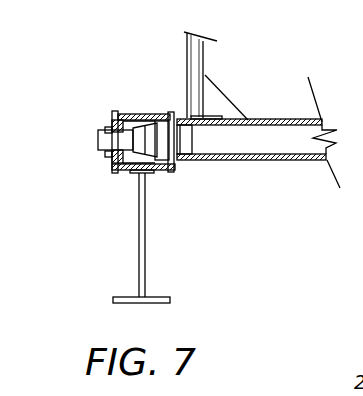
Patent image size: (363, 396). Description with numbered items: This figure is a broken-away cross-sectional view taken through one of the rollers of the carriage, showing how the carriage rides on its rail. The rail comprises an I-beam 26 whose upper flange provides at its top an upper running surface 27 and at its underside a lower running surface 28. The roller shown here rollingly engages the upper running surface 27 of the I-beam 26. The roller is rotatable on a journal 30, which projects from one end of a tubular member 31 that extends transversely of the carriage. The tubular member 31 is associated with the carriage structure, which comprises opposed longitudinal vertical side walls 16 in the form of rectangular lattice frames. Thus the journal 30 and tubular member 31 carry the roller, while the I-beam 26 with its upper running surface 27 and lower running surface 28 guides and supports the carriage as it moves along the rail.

The longitudinal vertical side wall 16 is at (192, 73).
The tubular member 31 is at (268, 120).
The lower running surface 28 is at (155, 172).
The journal 30 is at (100, 140).
The upper running surface 27 is at (133, 171).
The I-beam 26 is at (143, 255).